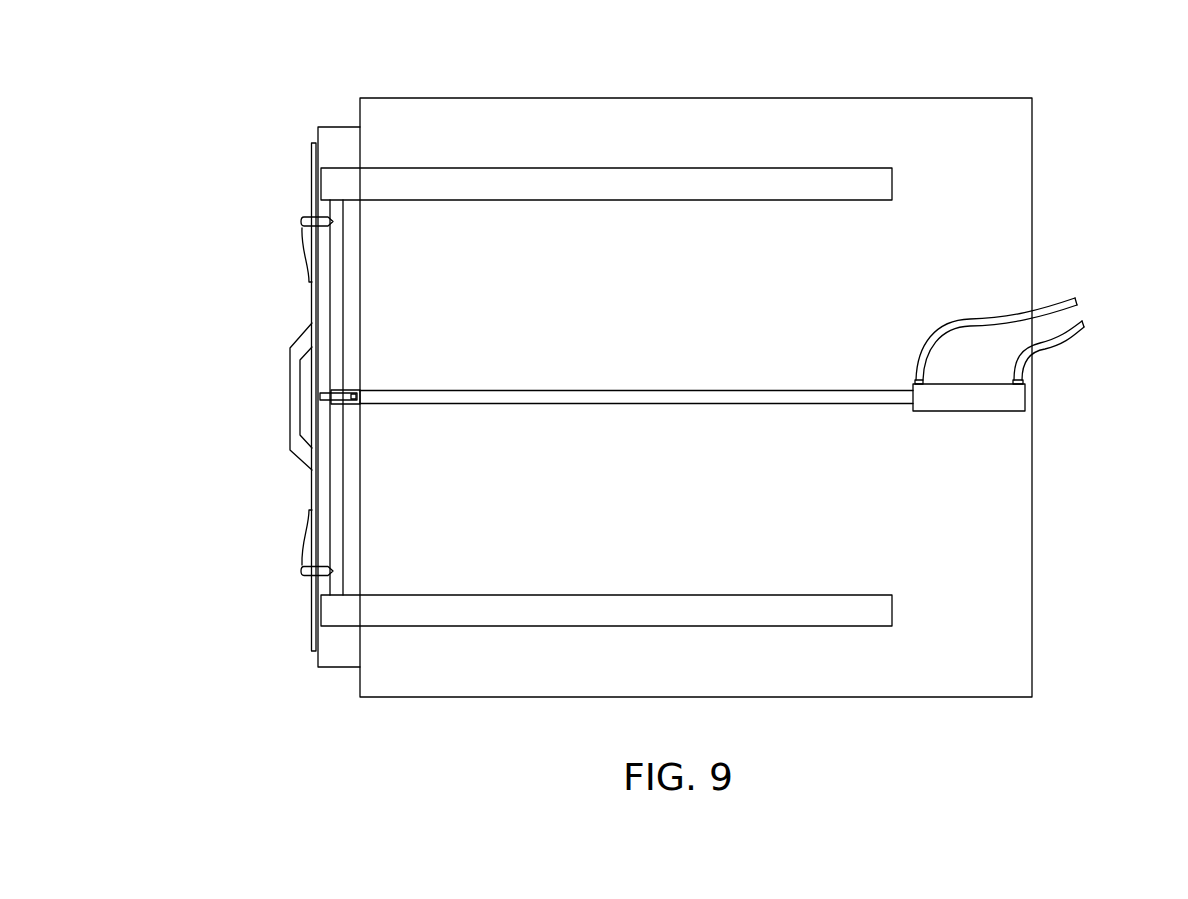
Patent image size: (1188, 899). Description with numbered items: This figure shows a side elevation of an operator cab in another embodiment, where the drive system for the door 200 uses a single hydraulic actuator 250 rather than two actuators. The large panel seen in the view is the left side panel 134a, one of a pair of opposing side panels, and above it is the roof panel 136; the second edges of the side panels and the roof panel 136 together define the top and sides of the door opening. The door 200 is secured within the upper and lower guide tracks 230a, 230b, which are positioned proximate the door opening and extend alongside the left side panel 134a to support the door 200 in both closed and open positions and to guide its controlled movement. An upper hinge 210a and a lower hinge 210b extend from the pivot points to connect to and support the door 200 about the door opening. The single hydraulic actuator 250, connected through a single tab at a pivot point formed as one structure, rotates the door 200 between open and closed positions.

The roof panel 136 is at (625, 98).
The left side panel 134a is at (766, 355).
The door 200 is at (310, 182).
The upper hinge 210a is at (302, 222).
The lower hinge 210b is at (303, 574).
The upper guide track 230a is at (665, 182).
The lower guide track 230b is at (627, 617).
The single hydraulic actuator 250 is at (970, 393).